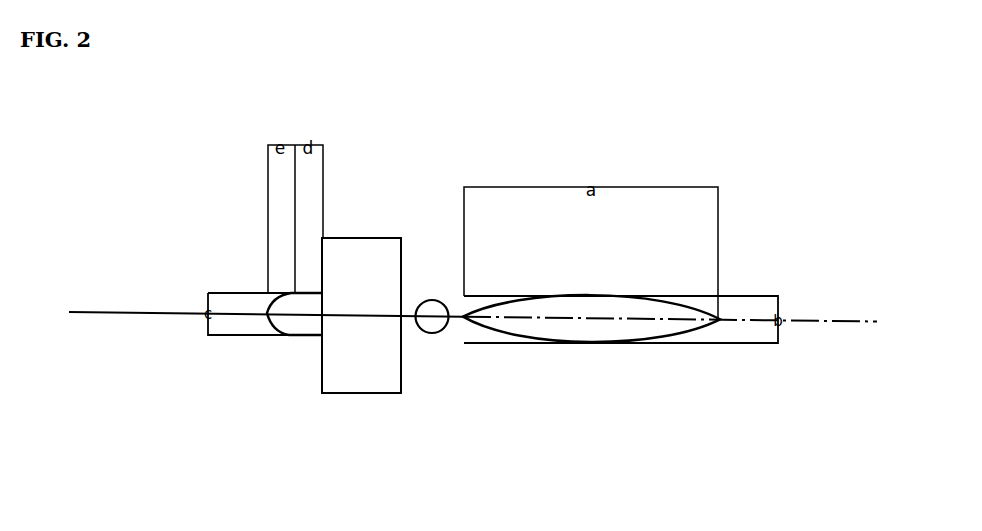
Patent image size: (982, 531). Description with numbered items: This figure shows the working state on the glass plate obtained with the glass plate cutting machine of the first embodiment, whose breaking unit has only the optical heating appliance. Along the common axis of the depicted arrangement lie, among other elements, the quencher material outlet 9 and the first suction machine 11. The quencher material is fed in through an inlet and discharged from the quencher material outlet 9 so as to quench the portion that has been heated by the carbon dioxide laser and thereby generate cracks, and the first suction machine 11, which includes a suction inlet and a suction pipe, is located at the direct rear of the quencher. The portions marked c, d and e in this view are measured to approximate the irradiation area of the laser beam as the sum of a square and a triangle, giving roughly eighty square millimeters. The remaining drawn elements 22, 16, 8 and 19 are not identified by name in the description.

The optical axis / light guide 22 is at (163, 315).
The lens 16 is at (293, 317).
The first suction machine 11 is at (355, 317).
The quencher material outlet 9 is at (430, 320).
The ellipsoidal reflector lamp 8 is at (557, 318).
The holder 19 is at (740, 320).